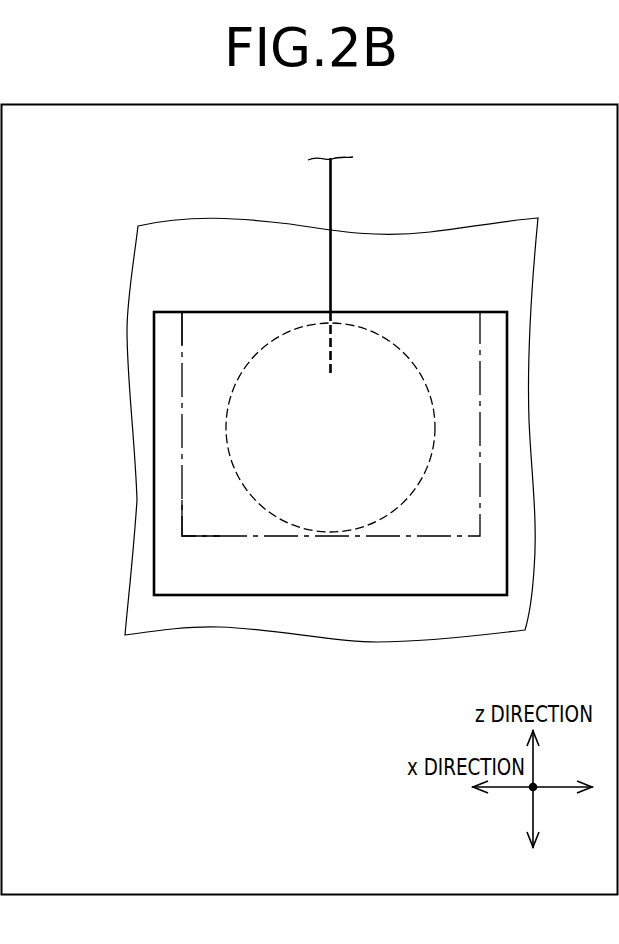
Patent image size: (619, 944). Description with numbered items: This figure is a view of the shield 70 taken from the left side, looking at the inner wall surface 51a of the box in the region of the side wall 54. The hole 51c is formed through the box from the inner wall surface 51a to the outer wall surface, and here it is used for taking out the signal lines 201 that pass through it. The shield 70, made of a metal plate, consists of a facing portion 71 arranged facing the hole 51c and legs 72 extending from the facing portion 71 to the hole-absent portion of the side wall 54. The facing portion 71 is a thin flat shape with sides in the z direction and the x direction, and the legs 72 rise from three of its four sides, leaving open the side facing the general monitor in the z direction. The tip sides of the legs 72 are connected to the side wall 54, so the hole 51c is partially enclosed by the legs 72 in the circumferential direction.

The inner wall surface 51a is at (508, 249).
The hole 51c is at (425, 385).
The side wall 54 is at (503, 617).
The shield 70 is at (79, 400).
The facing portion 71 is at (190, 417).
The legs 72 is at (153, 508).
The signal lines 201 is at (332, 197).